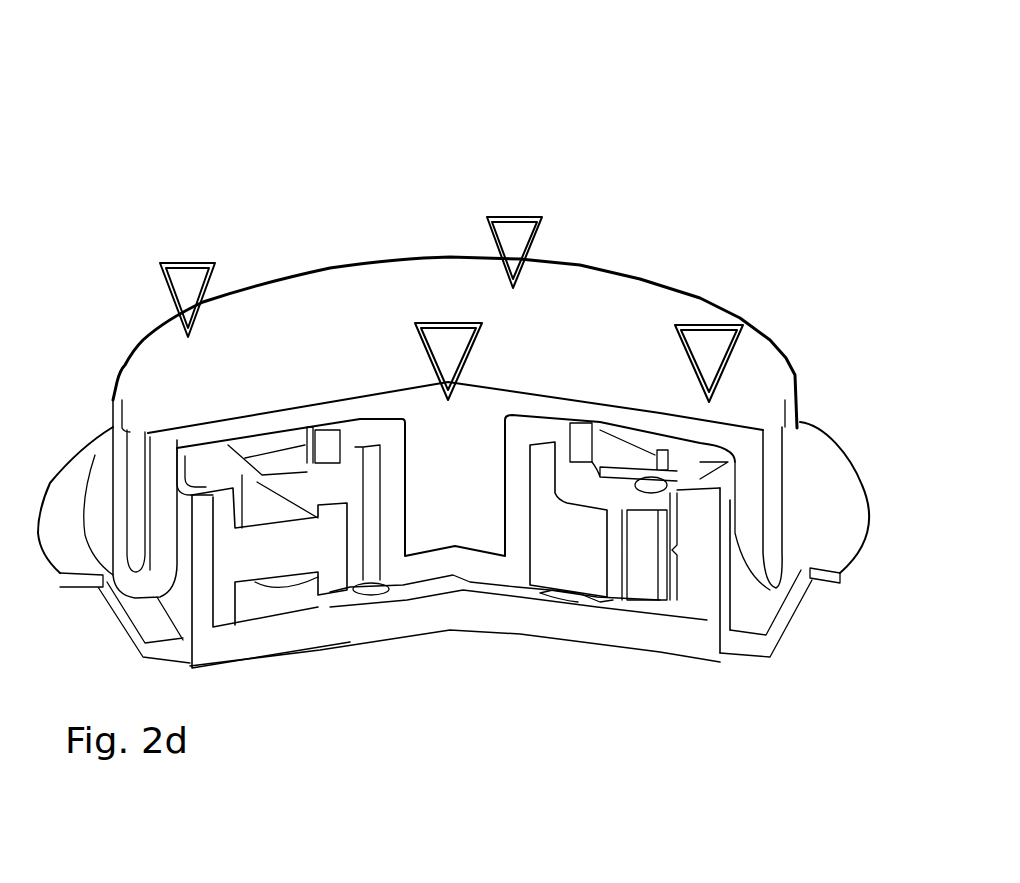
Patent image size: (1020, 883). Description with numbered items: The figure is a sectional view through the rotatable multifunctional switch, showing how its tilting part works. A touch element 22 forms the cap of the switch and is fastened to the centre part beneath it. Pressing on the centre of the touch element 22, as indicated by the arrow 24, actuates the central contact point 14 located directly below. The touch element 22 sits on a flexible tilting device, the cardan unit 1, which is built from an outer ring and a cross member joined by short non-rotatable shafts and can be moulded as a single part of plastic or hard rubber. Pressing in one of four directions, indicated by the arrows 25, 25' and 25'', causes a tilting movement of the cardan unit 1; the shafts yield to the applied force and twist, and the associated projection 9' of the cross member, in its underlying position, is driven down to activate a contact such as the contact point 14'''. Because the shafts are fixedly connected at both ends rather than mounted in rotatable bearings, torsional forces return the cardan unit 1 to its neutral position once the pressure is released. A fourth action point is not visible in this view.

The cardan unit 1 is at (293, 542).
The projection 9' is at (680, 594).
The central contact point 14 is at (455, 667).
The contact point 14''' is at (622, 675).
The touch element 22 is at (348, 278).
The arrow 24 is at (449, 323).
The arrow 25 is at (187, 202).
The arrow 25' is at (514, 149).
The arrow 25'' is at (710, 265).